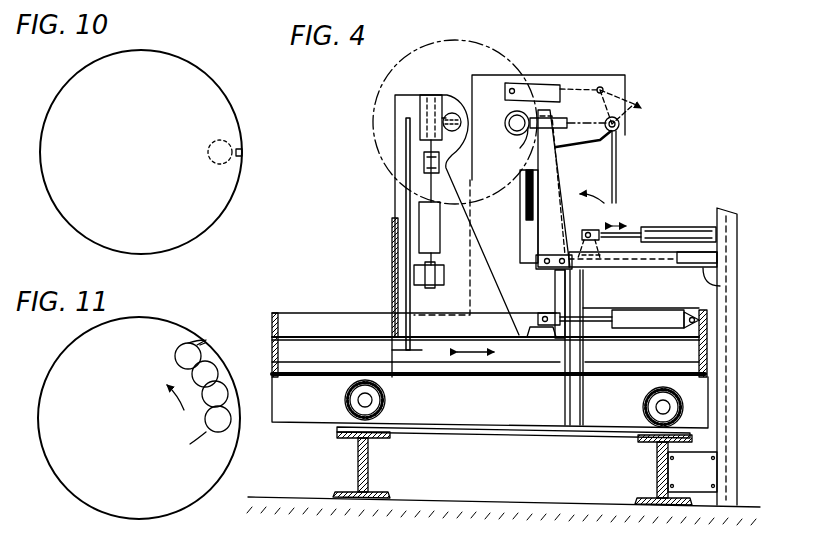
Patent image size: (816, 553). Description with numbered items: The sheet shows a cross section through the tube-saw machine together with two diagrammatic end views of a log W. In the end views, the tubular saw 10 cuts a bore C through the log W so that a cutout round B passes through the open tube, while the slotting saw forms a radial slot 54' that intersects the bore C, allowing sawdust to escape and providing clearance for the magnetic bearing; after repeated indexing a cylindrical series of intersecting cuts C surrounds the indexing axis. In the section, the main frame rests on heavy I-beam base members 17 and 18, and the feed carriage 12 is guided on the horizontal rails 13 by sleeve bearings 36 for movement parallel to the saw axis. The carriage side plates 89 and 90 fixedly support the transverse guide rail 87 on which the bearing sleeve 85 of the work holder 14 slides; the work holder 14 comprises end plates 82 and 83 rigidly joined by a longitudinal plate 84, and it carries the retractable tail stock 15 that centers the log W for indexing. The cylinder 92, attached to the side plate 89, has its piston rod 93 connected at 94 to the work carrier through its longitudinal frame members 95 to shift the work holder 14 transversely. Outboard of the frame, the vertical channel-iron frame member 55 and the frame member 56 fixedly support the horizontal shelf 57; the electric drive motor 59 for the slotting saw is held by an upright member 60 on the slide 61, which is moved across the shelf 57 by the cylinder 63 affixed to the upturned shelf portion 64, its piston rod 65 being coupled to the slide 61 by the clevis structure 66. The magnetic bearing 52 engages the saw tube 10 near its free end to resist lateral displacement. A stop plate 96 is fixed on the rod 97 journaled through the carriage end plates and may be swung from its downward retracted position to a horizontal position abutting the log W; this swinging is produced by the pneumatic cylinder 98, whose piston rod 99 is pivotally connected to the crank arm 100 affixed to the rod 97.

In FIG. 10, the log W is at (194, 80).
In FIG. 11, the log W is at (178, 336).
In FIG. 4, the log W is at (479, 53).
In FIG. 10, the cutout round B is at (210, 164).
In FIG. 11, the cuts or bores C is at (205, 432).
In FIG. 10, the slot 54' is at (245, 147).
In FIG. 11, the slot 54' is at (211, 373).
In FIG. 4, the tubular saw 10 is at (505, 122).
In FIG. 4, the feed carriage 12 is at (291, 296).
In FIG. 4, the rails 13 is at (347, 405).
In FIG. 4, the work holder 14 is at (379, 232).
In FIG. 4, the tail stock 15 is at (462, 110).
In FIG. 4, the base member 17 is at (656, 477).
In FIG. 4, the base member 18 is at (358, 473).
In FIG. 4, the sleeve bearings 36 is at (348, 387).
In FIG. 4, the magnet 52 is at (522, 148).
In FIG. 4, the outboard vertical frame member 55 is at (737, 345).
In FIG. 4, the frame member 56 is at (565, 407).
In FIG. 4, the horizontal shelf 57 is at (719, 288).
In FIG. 4, the electric drive motor 59 is at (526, 208).
In FIG. 4, the upright member 60 is at (520, 235).
In FIG. 4, the slide 61 is at (529, 268).
In FIG. 4, the cylinder 63 is at (676, 230).
In FIG. 4, the upturned shelf portion 64 is at (719, 251).
In FIG. 4, the piston rod 65 is at (634, 226).
In FIG. 4, the clevis structure 66 is at (592, 231).
In FIG. 4, the end plate 82 is at (395, 193).
In FIG. 4, the end plate 83 is at (525, 93).
In FIG. 4, the longitudinal plate 84 is at (393, 262).
In FIG. 4, the bearing sleeve 85 is at (482, 380).
In FIG. 4, the guide rail 87 is at (332, 350).
In FIG. 4, the carriage side plate 89 is at (708, 376).
In FIG. 4, the carriage side plate 90 is at (280, 320).
In FIG. 4, the cylinder 92 is at (642, 324).
In FIG. 4, the piston rod 93 is at (594, 330).
In FIG. 4, the connection 94 is at (535, 313).
In FIG. 4, the longitudinal frame members 95 is at (508, 353).
In FIG. 4, the plate 96 is at (617, 163).
In FIG. 4, the rod 97 is at (622, 123).
In FIG. 4, the pneumatic cylinder 98 is at (553, 82).
In FIG. 4, the piston rod 99 is at (575, 88).
In FIG. 4, the crank arm 100 is at (611, 90).